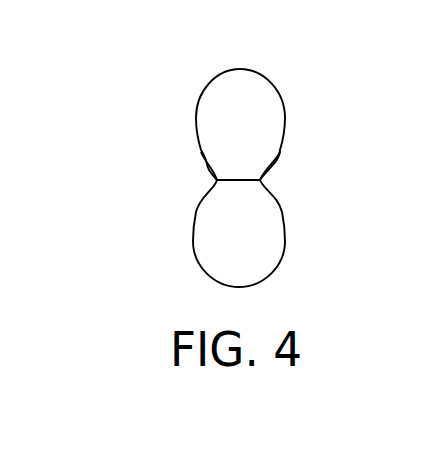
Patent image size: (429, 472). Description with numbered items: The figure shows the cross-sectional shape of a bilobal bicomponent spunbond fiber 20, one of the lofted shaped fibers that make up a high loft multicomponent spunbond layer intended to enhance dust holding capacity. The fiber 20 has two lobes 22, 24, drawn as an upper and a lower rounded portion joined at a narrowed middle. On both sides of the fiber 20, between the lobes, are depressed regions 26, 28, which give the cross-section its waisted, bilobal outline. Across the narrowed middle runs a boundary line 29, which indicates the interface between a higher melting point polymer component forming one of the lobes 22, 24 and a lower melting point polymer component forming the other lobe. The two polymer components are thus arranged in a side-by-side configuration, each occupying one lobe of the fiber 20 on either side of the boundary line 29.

The bilobal bicomponent spunbond fiber 20 is at (258, 150).
The lobe 22 is at (275, 127).
The lobe 24 is at (280, 242).
The depressed region 26 is at (218, 180).
The depressed region 28 is at (277, 185).
The boundary line 29 is at (242, 182).